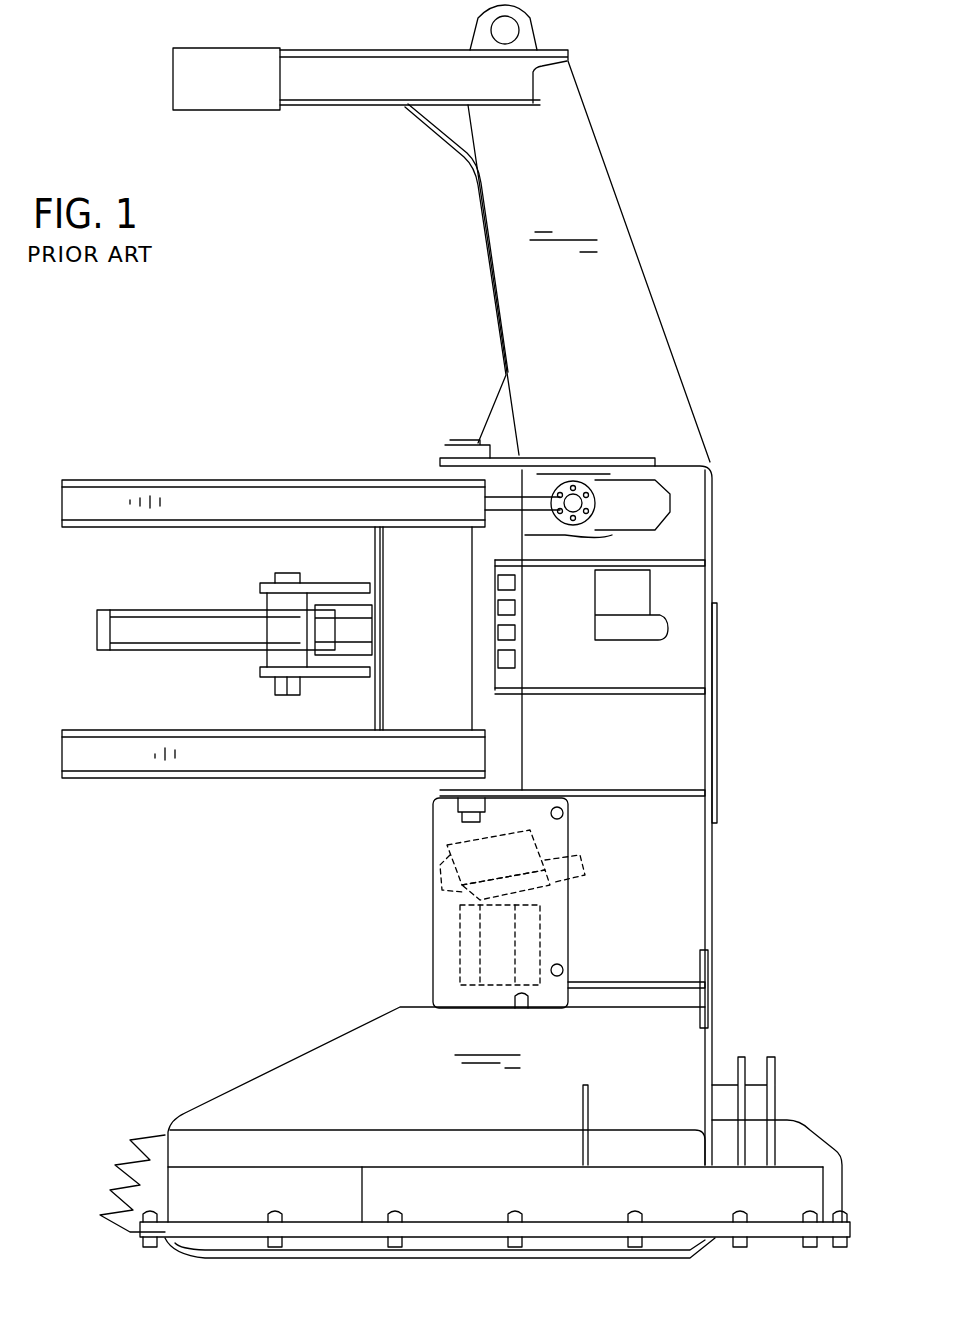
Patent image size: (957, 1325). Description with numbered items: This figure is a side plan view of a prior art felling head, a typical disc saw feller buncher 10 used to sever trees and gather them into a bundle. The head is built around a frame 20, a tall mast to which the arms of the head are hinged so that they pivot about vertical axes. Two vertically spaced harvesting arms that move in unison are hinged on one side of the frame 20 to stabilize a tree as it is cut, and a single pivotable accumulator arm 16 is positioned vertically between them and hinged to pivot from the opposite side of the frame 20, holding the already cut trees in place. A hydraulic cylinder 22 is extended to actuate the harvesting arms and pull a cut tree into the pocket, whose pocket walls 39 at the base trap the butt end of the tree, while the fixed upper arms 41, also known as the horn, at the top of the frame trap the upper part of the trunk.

The disc saw feller buncher 10 is at (742, 700).
The accumulator arm 16 is at (130, 655).
The frame 20 is at (645, 257).
The hydraulic cylinder 22 is at (650, 510).
The pocket walls 39 is at (245, 1078).
The fixed upper arms 41 is at (245, 62).